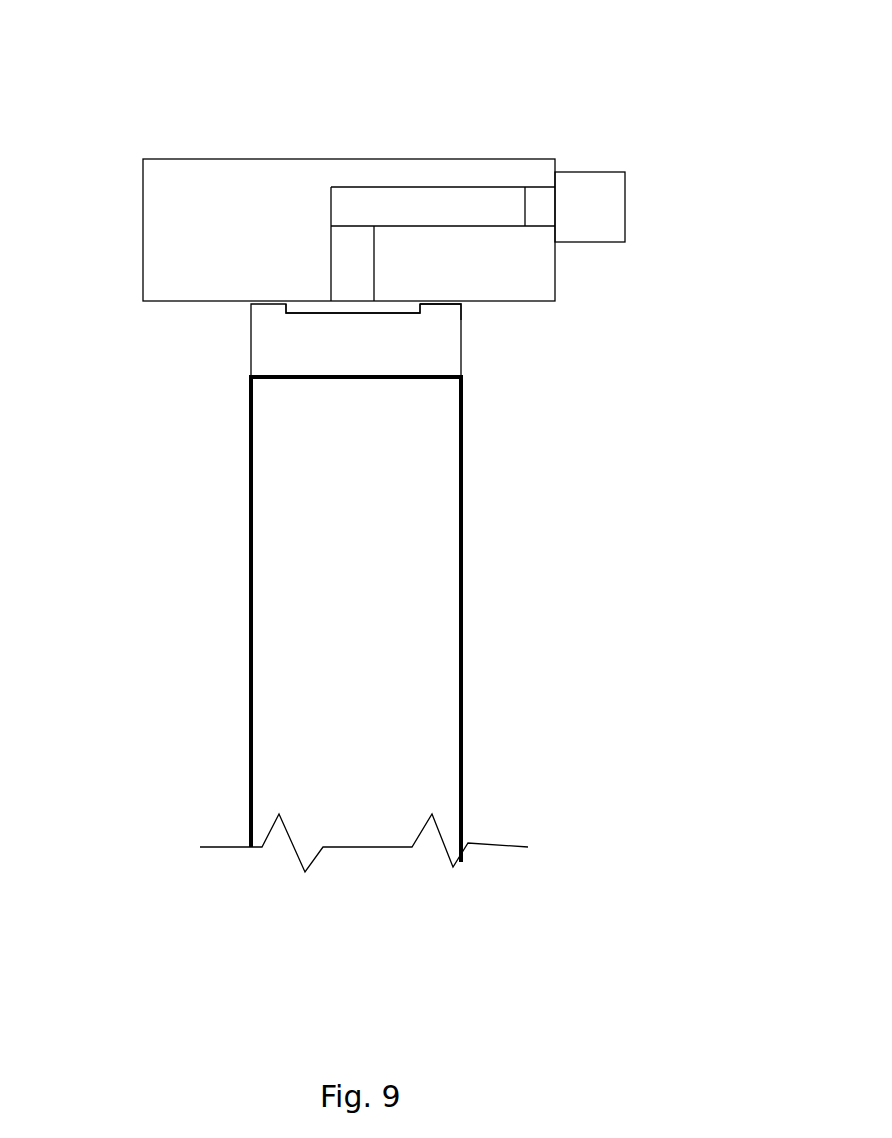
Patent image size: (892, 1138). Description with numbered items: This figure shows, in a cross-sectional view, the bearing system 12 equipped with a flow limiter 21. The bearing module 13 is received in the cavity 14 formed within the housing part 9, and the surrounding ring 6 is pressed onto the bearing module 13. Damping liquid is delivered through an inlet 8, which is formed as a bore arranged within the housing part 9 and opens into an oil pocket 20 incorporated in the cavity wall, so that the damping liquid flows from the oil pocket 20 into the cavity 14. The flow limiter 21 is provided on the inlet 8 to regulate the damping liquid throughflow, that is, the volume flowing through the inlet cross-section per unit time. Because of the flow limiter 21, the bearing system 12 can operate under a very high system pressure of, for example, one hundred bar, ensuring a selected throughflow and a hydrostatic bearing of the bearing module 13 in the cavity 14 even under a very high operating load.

The bearing system 12 is at (575, 96).
The housing part 9 is at (203, 223).
The inlet 8 is at (354, 238).
The flow limiter 21 is at (590, 215).
The surrounding ring 6 is at (288, 356).
The oil pocket 20 is at (320, 309).
The cavity 14 is at (466, 309).
The bearing module 13 is at (416, 682).